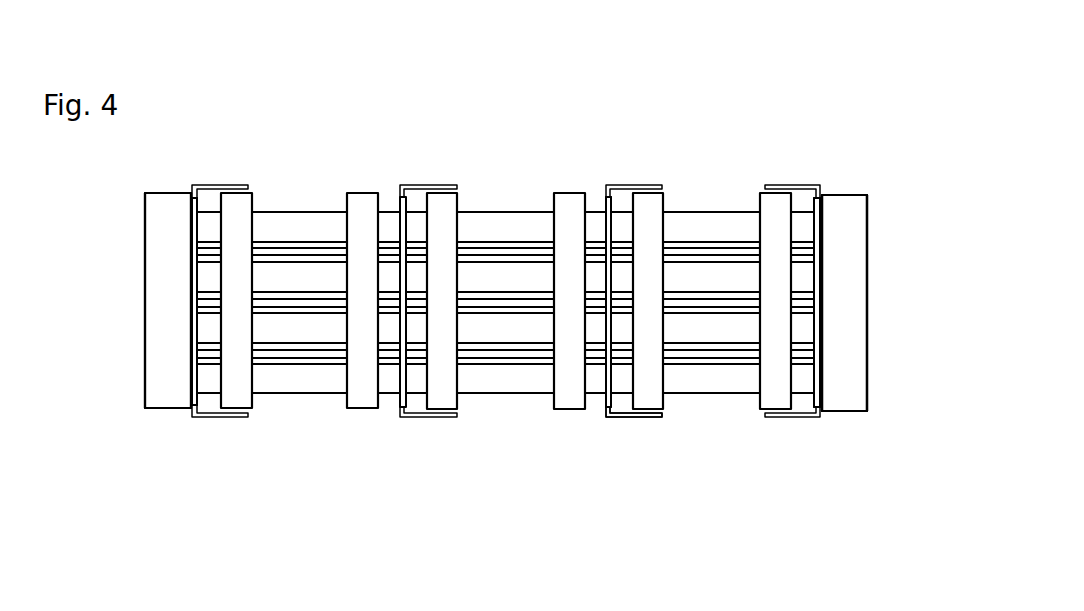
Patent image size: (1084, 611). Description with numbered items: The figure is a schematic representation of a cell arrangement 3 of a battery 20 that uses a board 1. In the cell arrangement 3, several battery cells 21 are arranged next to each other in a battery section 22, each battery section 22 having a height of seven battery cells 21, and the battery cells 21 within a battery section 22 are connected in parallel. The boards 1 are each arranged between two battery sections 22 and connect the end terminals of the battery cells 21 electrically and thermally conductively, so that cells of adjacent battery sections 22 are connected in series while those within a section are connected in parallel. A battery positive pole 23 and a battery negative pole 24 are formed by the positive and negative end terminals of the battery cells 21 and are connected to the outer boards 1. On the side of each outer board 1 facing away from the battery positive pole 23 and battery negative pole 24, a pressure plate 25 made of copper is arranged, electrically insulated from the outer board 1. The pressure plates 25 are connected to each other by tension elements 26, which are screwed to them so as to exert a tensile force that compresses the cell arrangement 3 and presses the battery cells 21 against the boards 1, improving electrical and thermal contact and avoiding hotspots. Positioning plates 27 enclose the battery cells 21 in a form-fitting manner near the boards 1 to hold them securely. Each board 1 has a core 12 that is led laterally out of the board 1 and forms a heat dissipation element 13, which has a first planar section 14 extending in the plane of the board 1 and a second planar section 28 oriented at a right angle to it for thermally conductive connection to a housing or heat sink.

The board 1 is at (405, 223).
The cell arrangement 3 is at (480, 203).
The core 12 is at (208, 185).
The heat dissipation element 13 is at (238, 185).
The first planar section 14 is at (607, 420).
The battery 20 is at (855, 180).
The battery cell 21 is at (707, 270).
The battery section 22 is at (295, 197).
The battery positive pole 23 is at (183, 328).
The battery negative pole 24 is at (848, 355).
The pressure plate 25 is at (163, 297).
The tension element 26 is at (278, 307).
The positioning plate 27 is at (232, 215).
The second planar section 28 is at (655, 417).